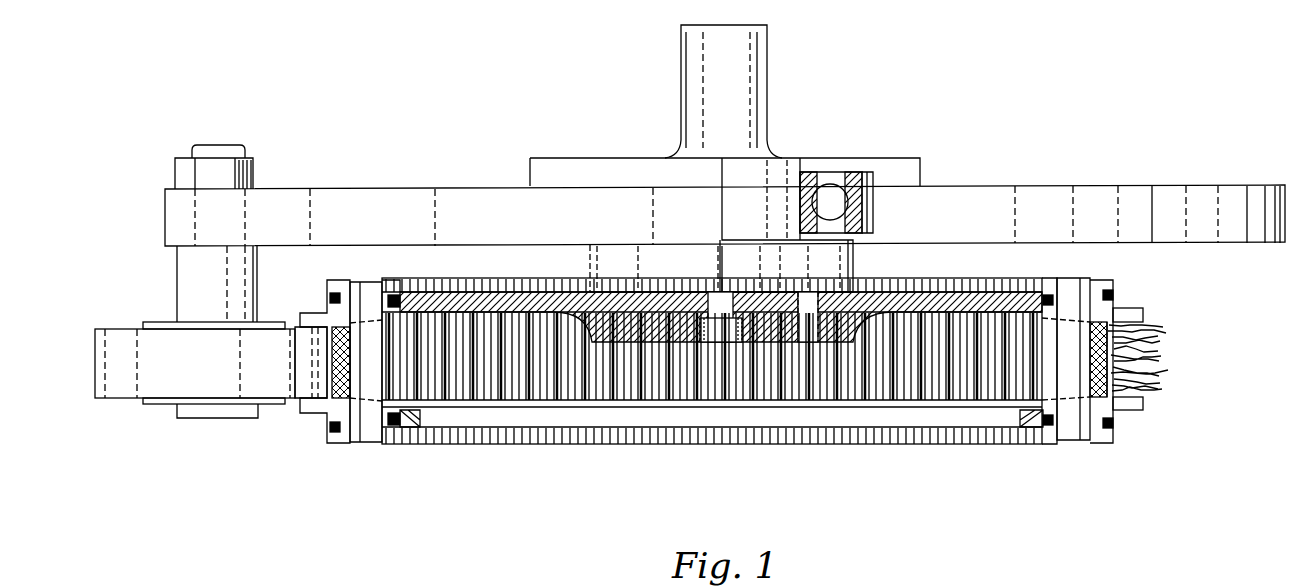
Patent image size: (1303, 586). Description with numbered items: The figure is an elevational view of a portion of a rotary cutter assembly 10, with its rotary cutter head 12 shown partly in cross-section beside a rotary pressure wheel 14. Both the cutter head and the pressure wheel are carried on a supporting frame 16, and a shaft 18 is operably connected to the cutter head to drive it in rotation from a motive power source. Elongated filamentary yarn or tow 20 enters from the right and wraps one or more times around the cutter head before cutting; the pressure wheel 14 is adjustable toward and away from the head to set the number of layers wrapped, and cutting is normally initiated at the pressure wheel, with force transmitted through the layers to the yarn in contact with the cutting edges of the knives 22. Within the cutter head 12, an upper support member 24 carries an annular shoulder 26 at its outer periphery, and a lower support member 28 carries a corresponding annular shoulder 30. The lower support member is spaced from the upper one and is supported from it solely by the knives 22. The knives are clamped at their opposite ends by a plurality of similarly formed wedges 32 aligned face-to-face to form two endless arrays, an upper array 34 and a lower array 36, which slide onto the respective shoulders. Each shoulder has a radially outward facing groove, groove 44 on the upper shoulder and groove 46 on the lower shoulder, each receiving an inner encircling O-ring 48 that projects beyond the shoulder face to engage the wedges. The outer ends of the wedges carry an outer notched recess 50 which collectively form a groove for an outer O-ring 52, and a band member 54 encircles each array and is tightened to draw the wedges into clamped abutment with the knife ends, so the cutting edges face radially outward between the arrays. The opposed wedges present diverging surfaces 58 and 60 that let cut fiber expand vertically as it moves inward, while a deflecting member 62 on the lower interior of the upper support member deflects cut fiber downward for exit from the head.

The rotary cutter assembly 10 is at (305, 110).
The rotary cutter head 12 is at (462, 275).
The rotary pressure wheel 14 is at (92, 345).
The supporting frame 16 is at (428, 188).
The shaft 18 is at (768, 70).
The filamentary yarn or tow 20 is at (1215, 356).
The knives 22 is at (757, 395).
The upper support member 24 is at (955, 292).
The annular shoulder 26 is at (1040, 290).
The lower support member 28 is at (1022, 412).
The annular shoulder 30 is at (1045, 430).
The wedges 32 is at (1172, 298).
The upper array 34 is at (1048, 280).
The lower array 36 is at (1117, 443).
The annular groove 44 is at (398, 303).
The annular groove 46 is at (407, 428).
The O-ring 48 is at (388, 298).
The outer notched recess 50 is at (332, 282).
The O-ring 52 is at (330, 298).
The band member 54 is at (1113, 290).
The diverging surface 58 is at (1070, 341).
The diverging surface 60 is at (1037, 395).
The deflecting member 62 is at (578, 292).